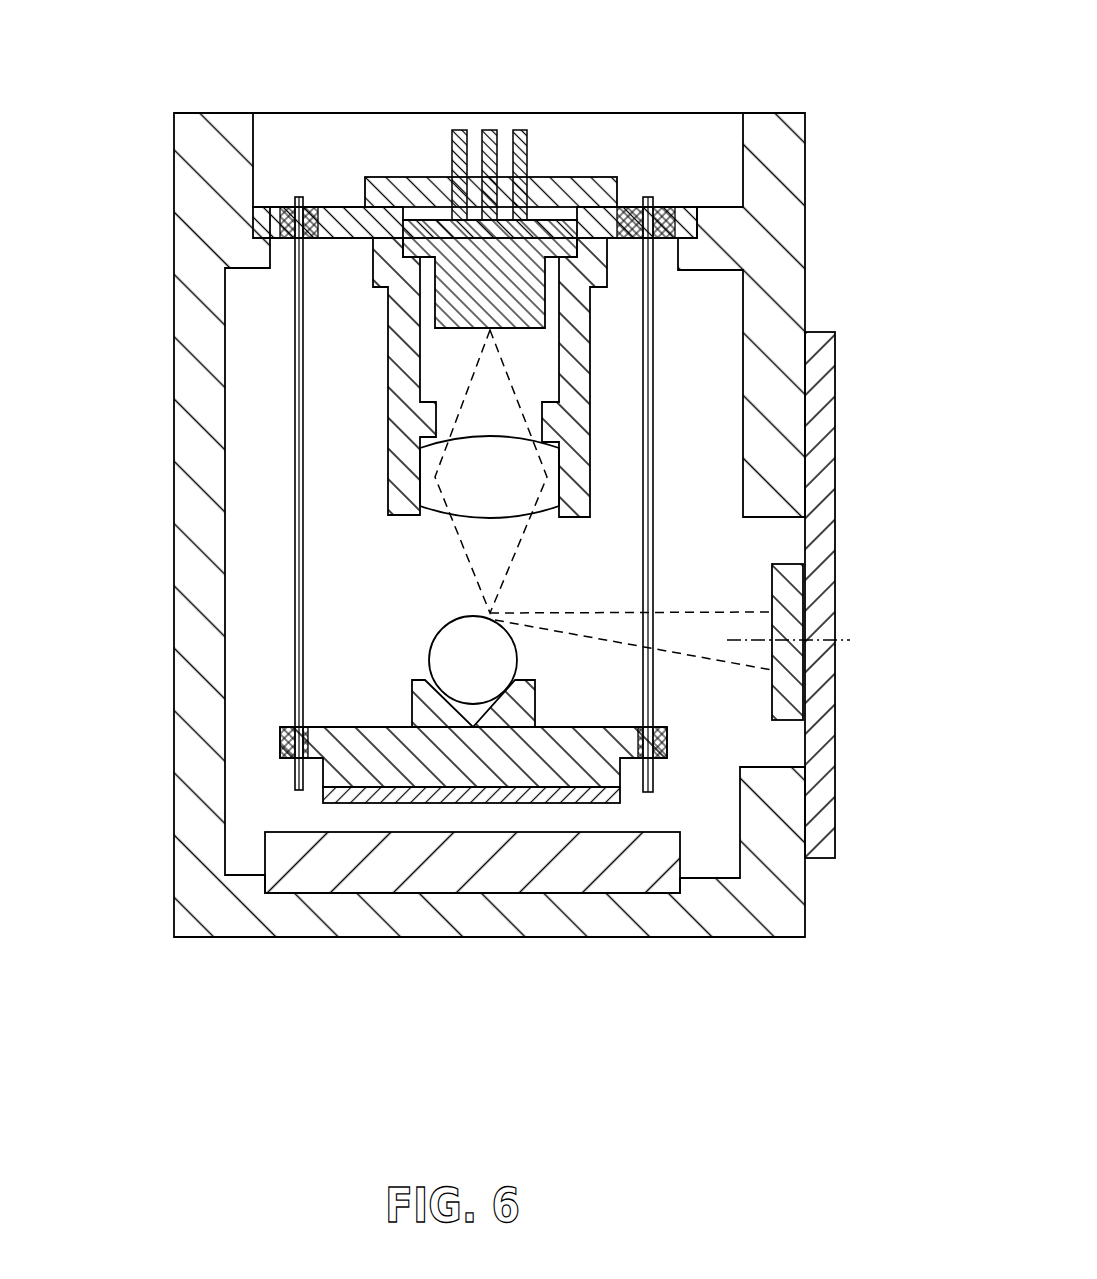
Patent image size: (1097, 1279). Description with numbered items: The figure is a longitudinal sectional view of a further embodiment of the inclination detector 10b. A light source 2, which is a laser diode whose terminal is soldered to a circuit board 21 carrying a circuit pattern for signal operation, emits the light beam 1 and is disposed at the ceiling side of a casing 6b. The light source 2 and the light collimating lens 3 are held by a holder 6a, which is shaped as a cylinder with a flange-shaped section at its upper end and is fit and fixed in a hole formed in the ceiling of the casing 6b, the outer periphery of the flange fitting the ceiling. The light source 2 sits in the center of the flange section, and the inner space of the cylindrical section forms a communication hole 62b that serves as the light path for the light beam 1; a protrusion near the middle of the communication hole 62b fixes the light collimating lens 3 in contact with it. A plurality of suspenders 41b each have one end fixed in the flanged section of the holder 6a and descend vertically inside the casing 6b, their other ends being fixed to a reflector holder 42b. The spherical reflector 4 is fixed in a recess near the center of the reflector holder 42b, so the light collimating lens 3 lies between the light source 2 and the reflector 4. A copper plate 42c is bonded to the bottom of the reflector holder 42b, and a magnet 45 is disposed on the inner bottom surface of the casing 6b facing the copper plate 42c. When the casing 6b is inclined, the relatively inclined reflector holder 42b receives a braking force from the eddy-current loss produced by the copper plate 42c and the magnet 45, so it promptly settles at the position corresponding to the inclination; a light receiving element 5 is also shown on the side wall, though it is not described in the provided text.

The inclination detector 10b is at (842, 97).
The holder 6a is at (338, 205).
The casing 6b is at (787, 292).
The light source 2 is at (521, 130).
The circuit board 21 is at (593, 177).
The communication hole 62b is at (440, 378).
The light collimating lens 3 is at (430, 497).
The light beam 1 is at (565, 611).
The spherical reflector 4 is at (437, 660).
The light receiving element 5 is at (797, 594).
The suspenders 41b is at (293, 324).
The reflector holder 42b is at (353, 768).
The copper plate 42c is at (413, 803).
The magnet 45 is at (540, 880).